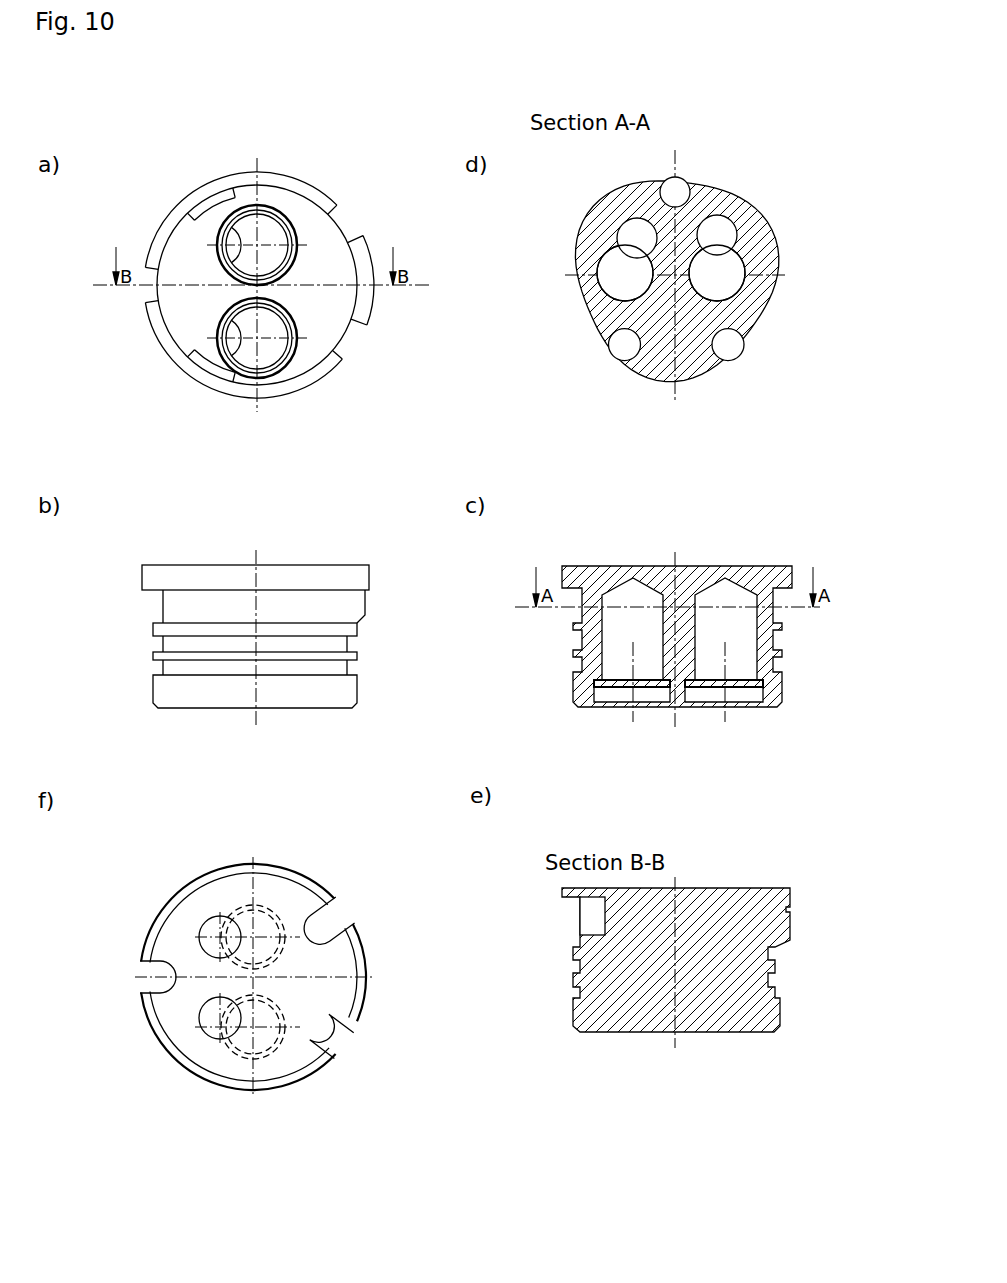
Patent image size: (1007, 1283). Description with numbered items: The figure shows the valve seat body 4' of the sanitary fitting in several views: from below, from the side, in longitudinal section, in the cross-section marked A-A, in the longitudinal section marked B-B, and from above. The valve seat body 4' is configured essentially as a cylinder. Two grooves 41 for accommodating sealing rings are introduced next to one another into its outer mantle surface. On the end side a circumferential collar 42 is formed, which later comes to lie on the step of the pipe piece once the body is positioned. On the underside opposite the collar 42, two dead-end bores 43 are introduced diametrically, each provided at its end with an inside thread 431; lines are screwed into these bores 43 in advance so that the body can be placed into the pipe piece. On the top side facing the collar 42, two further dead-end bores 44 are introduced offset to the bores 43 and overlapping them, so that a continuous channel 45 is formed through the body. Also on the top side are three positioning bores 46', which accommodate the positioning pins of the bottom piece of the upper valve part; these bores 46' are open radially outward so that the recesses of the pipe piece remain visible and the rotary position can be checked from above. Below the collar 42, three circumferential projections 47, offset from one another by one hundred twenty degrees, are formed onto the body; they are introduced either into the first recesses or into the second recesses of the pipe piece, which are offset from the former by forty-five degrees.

The valve seat body 4' is at (313, 606).
The groove 41 is at (337, 662).
The circumferential collar 42 is at (273, 180).
The dead-end bore 43 is at (263, 338).
The inside thread 431 is at (663, 685).
The dead-end bore 44 is at (717, 235).
The continuous channel 45 is at (238, 328).
The positioning bore 46' is at (437, 615).
The circumferential projection 47 is at (203, 192).